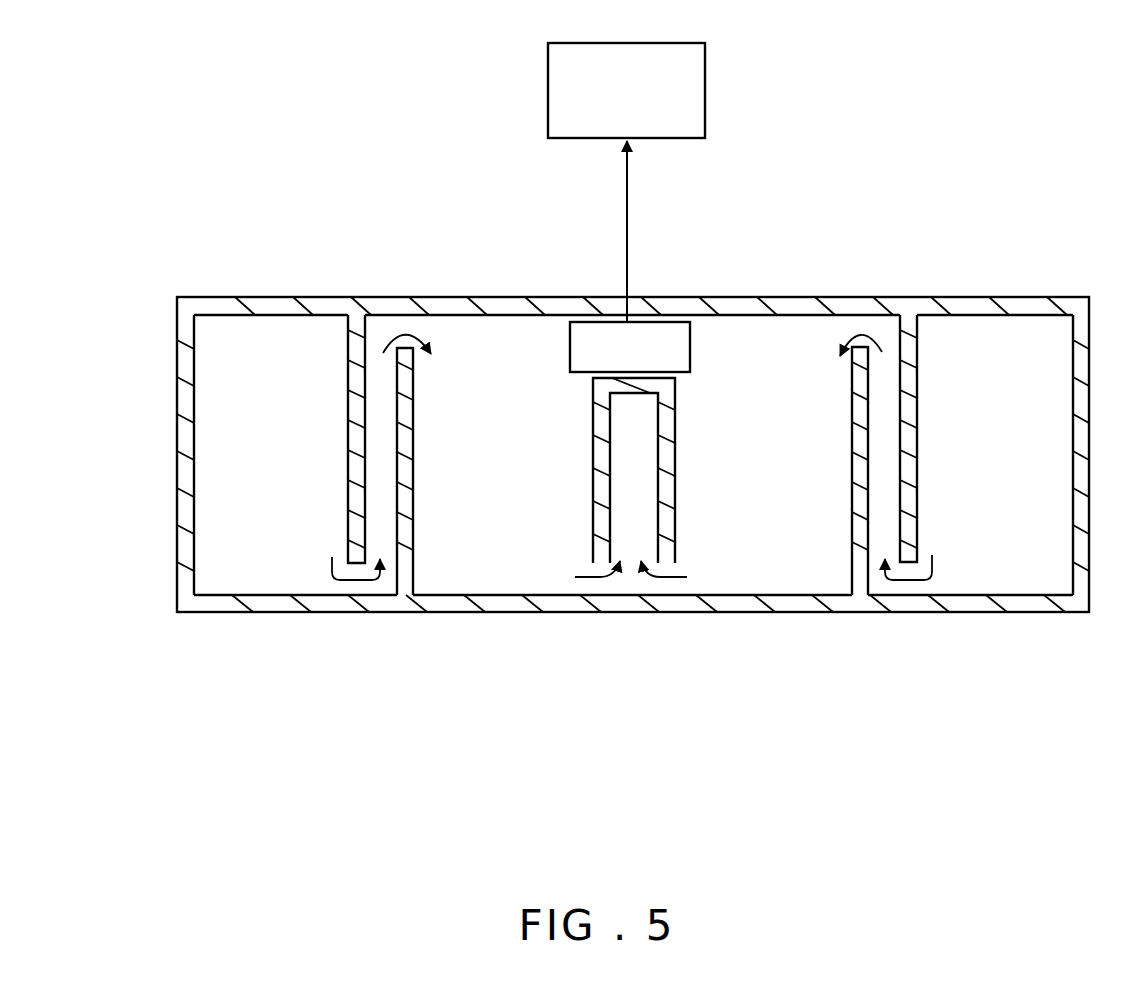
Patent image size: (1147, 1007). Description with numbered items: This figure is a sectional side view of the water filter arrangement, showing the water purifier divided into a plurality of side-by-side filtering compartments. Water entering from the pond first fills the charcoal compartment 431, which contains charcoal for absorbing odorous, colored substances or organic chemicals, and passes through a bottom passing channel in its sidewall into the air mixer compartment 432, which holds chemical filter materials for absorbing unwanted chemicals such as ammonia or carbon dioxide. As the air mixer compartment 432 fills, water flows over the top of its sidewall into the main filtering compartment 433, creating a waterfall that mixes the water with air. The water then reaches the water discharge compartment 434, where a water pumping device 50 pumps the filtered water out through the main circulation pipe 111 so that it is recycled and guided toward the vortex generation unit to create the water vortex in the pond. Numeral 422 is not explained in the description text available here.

The main circulation pipe 111 is at (626, 182).
The water pumping device 50 is at (630, 347).
The first partition wall 422 is at (380, 402).
The air mixer compartment 432 is at (885, 418).
The main filtering compartment 433 is at (508, 418).
The water discharge compartment 434 is at (633, 455).
The charcoal compartment 431 is at (248, 523).